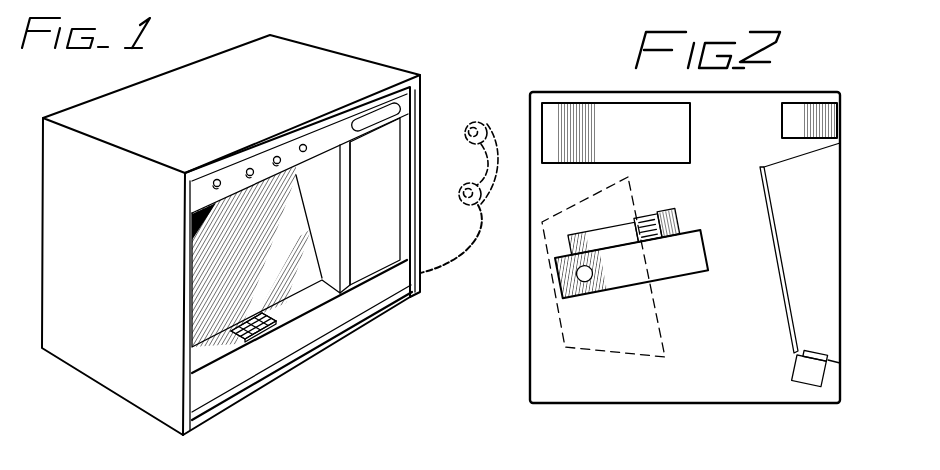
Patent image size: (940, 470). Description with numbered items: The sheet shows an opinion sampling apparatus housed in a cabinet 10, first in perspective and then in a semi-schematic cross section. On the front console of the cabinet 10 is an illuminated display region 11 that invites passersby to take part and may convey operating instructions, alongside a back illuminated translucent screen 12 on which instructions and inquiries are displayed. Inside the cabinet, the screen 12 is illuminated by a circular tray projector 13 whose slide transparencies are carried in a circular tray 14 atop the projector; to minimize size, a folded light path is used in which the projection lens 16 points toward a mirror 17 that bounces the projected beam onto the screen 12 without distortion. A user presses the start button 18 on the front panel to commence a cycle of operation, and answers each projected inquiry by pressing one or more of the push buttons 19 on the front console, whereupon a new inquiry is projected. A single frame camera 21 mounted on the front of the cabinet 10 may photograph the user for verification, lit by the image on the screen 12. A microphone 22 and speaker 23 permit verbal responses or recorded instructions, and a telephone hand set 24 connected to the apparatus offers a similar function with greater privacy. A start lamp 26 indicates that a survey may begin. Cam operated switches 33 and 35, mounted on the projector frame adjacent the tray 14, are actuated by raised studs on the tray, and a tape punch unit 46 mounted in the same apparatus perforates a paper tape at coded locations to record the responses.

In FIG. 1, the cabinet 10 is at (248, 52).
In FIG. 1, the illuminated display region 11 is at (408, 295).
In FIG. 1, the back illuminated translucent screen 12 is at (370, 262).
In FIG. 2, the back illuminated translucent screen 12 is at (782, 307).
In FIG. 2, the circular tray projector 13 is at (598, 293).
In FIG. 2, the circular tray 14 is at (682, 218).
In FIG. 2, the projection lens 16 is at (557, 273).
In FIG. 2, the mirror 17 is at (560, 320).
In FIG. 1, the start button 18 is at (278, 157).
In FIG. 1, the push buttons 19 is at (277, 327).
In FIG. 2, the push buttons 19 is at (812, 352).
In FIG. 1, the single frame camera 21 is at (252, 170).
In FIG. 2, the single frame camera 21 is at (795, 108).
In FIG. 1, the microphone 22 is at (304, 147).
In FIG. 1, the speaker 23 is at (390, 110).
In FIG. 1, the telephone hand set 24 is at (481, 118).
In FIG. 1, the start lamp 26 is at (218, 181).
In FIG. 2, the cam operated switch 33 is at (670, 237).
In FIG. 2, the cam operated switch 35 is at (668, 213).
In FIG. 2, the tape punch unit 46 is at (610, 112).